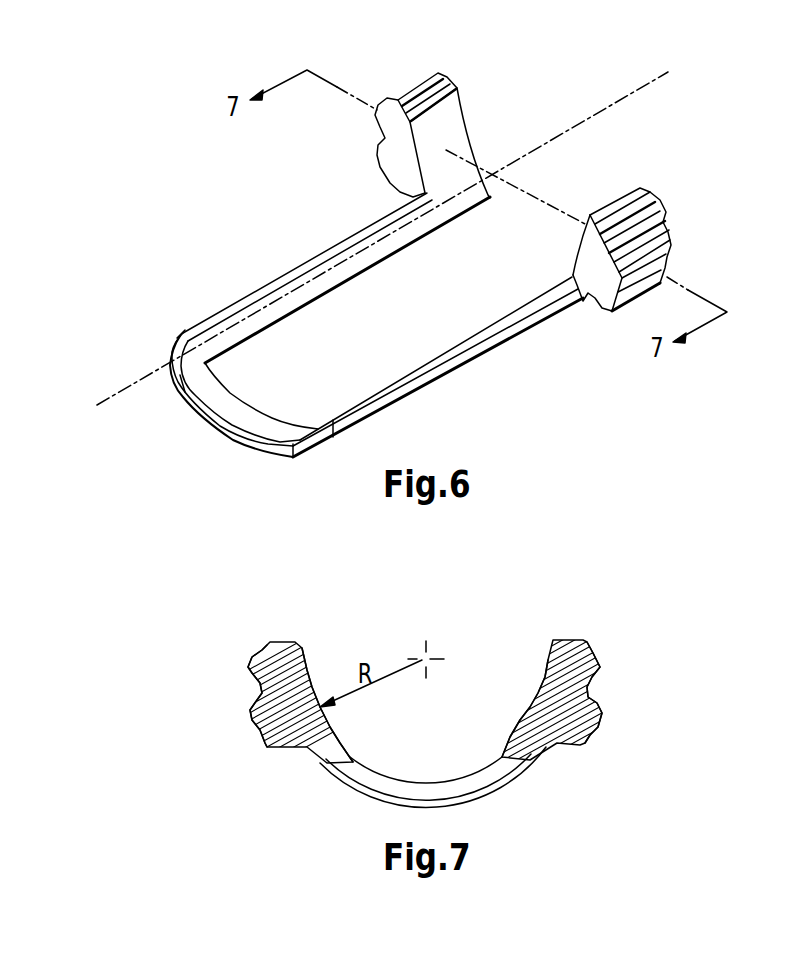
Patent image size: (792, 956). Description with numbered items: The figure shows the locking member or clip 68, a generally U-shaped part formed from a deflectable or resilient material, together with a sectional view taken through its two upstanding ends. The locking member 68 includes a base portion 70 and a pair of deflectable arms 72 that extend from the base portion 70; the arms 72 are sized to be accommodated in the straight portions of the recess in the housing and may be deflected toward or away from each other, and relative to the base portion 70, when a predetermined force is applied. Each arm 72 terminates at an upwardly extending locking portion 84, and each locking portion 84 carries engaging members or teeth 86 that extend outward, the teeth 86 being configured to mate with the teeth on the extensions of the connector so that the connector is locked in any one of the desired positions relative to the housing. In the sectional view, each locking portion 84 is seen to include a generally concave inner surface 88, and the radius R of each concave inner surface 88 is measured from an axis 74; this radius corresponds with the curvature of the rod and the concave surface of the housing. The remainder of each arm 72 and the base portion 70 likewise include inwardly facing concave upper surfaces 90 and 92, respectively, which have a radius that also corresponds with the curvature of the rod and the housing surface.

In FIG. 6, the locking member 68 is at (489, 390).
In FIG. 6, the base portion 70 is at (210, 425).
In FIG. 6, the deflectable arms 72 is at (310, 262).
In FIG. 6, the axis 74 is at (596, 113).
In FIG. 7, the axis 74 is at (418, 655).
In FIG. 6, the locking portion 84 is at (398, 122).
In FIG. 7, the locking portion 84 is at (283, 670).
In FIG. 6, the teeth 86 is at (377, 147).
In FIG. 7, the teeth 86 is at (252, 707).
In FIG. 6, the concave inner surface 88 is at (450, 137).
In FIG. 7, the concave inner surface 88 is at (308, 687).
In FIG. 6, the concave upper surface of arm 90 is at (266, 297).
In FIG. 6, the concave upper surface of base portion 92 is at (242, 419).